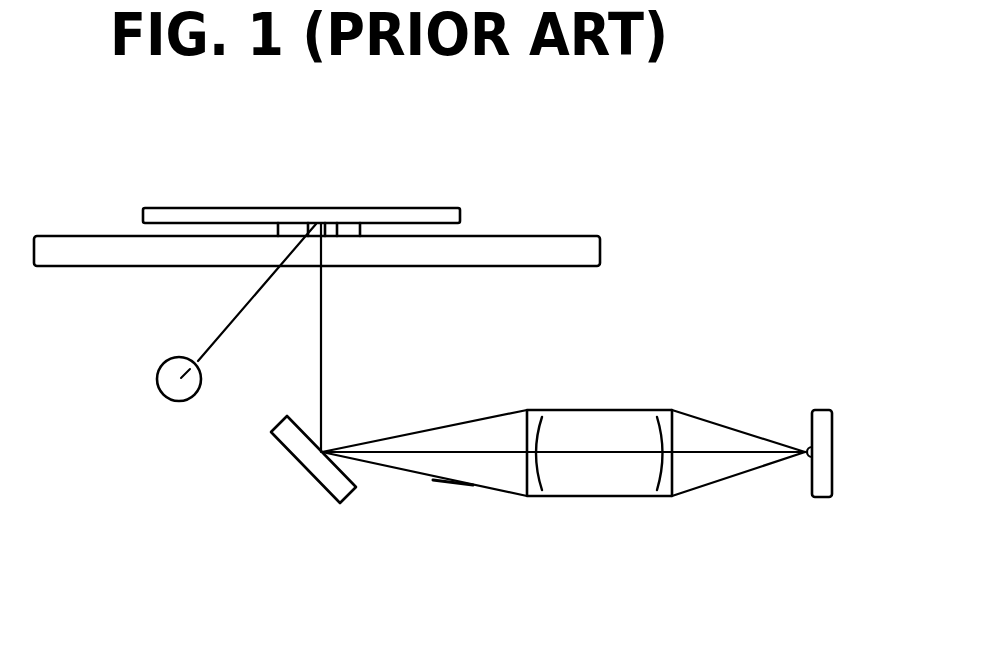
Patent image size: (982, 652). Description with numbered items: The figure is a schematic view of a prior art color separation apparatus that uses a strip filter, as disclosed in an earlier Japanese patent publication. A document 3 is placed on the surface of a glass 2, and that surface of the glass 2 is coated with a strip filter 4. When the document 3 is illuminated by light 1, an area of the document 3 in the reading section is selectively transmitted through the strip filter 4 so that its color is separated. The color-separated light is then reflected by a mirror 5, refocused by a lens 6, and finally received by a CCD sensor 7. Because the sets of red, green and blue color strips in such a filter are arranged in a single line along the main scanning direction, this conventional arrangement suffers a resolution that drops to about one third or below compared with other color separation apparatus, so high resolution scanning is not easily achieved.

The light 1 is at (163, 387).
The glass 2 is at (593, 253).
The document 3 is at (460, 210).
The strip filter 4 is at (348, 228).
The mirror 5 is at (332, 498).
The lens 6 is at (607, 497).
The CCD sensor 7 is at (821, 497).